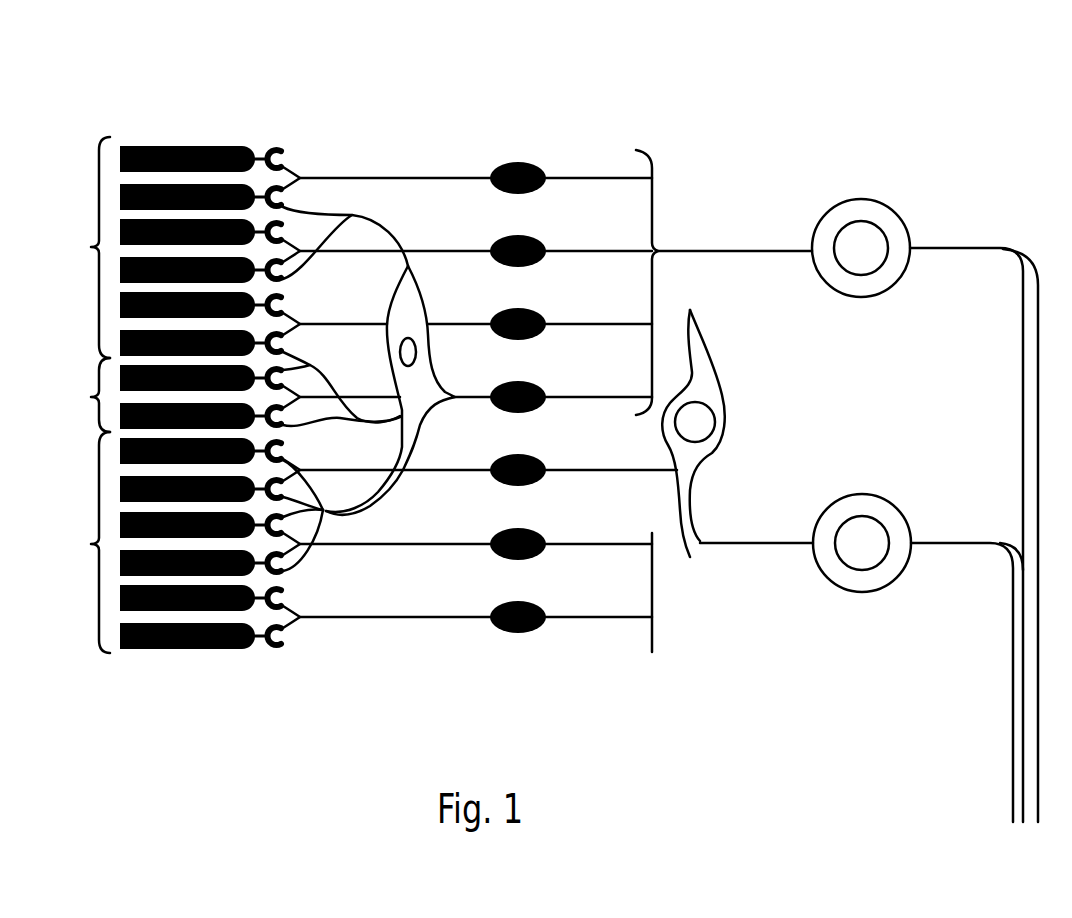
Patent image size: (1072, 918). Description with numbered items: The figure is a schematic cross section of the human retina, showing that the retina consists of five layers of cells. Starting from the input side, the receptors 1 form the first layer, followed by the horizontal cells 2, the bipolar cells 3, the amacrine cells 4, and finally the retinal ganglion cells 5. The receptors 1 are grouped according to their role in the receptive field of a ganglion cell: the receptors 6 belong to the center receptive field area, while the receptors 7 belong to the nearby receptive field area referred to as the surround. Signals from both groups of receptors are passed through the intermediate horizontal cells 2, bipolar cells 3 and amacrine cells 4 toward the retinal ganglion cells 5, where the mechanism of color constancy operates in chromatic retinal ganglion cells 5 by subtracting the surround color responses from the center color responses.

The receptors 1 is at (176, 652).
The horizontal cells 2 is at (415, 293).
The bipolar cells 3 is at (514, 162).
The amacrine cells 4 is at (690, 557).
The retinal ganglion cells 5 is at (838, 200).
The receptors of the center receptive field area 6 is at (85, 395).
The receptors of the surround receptive field area 7 is at (85, 395).